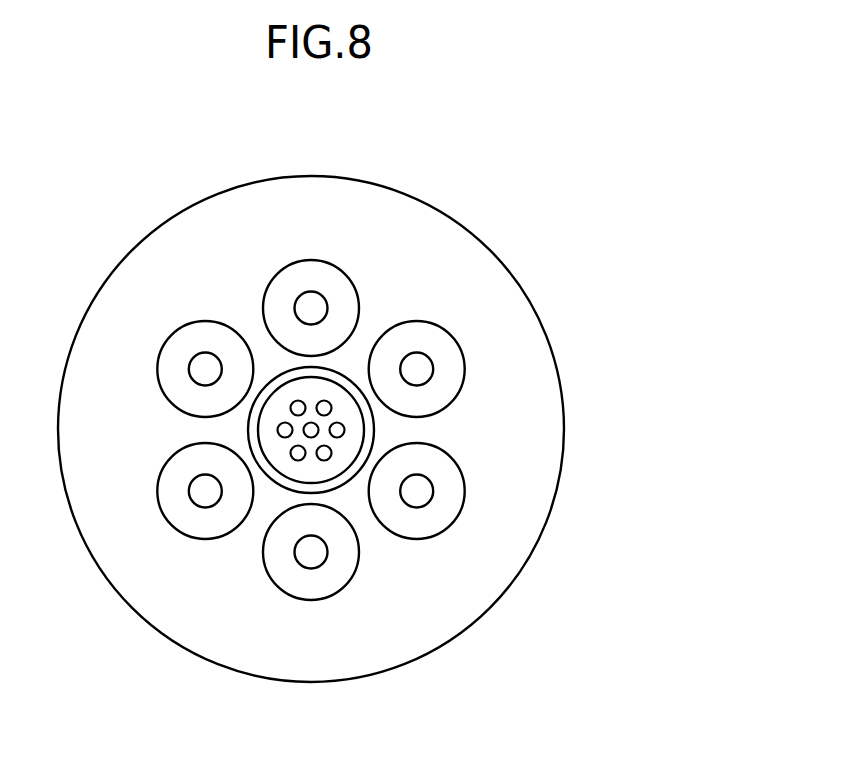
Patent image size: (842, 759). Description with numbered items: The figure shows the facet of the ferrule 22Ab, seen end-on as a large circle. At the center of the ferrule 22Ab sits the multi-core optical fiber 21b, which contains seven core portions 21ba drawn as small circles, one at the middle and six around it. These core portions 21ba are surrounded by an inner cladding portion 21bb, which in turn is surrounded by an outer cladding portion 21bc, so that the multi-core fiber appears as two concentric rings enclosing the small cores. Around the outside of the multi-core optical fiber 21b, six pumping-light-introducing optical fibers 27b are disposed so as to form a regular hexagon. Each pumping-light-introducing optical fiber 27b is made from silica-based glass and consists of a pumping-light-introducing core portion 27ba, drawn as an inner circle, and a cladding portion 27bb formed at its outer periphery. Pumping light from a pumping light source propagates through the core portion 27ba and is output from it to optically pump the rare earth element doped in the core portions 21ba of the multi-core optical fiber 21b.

The ferrule 22Ab is at (478, 233).
The pumping-light-introducing optical fiber 27b is at (340, 244).
The pumping-light-introducing core portion 27ba is at (323, 302).
The cladding portion 27bb is at (343, 297).
The multi-core optical fiber 21b is at (309, 482).
The outer cladding portion 21bc is at (253, 432).
The core portion 21ba is at (324, 461).
The inner cladding portion 21bb is at (298, 472).